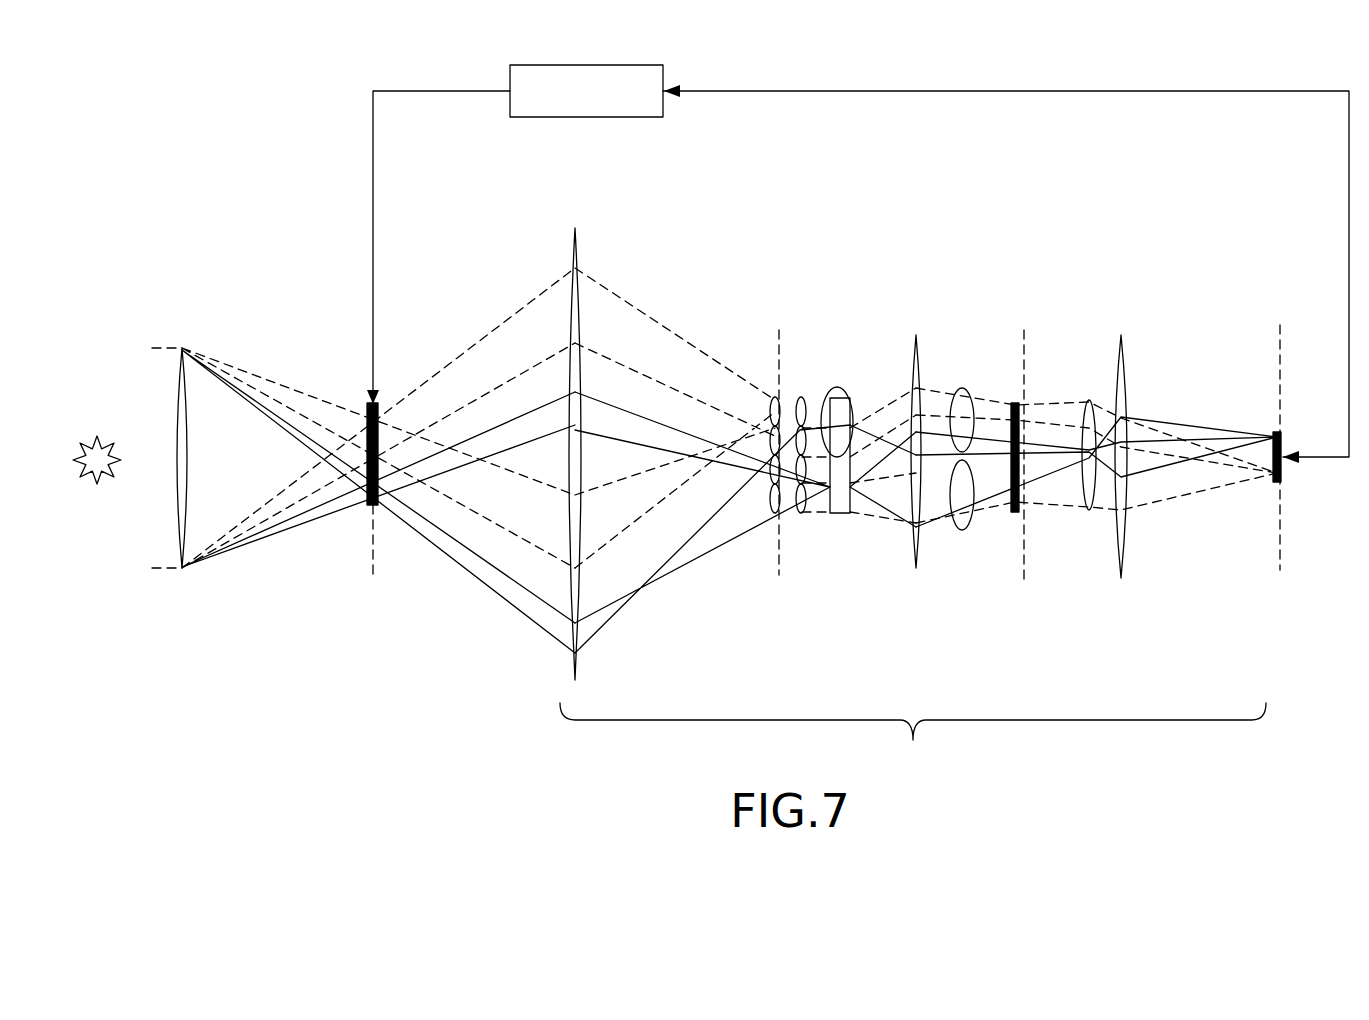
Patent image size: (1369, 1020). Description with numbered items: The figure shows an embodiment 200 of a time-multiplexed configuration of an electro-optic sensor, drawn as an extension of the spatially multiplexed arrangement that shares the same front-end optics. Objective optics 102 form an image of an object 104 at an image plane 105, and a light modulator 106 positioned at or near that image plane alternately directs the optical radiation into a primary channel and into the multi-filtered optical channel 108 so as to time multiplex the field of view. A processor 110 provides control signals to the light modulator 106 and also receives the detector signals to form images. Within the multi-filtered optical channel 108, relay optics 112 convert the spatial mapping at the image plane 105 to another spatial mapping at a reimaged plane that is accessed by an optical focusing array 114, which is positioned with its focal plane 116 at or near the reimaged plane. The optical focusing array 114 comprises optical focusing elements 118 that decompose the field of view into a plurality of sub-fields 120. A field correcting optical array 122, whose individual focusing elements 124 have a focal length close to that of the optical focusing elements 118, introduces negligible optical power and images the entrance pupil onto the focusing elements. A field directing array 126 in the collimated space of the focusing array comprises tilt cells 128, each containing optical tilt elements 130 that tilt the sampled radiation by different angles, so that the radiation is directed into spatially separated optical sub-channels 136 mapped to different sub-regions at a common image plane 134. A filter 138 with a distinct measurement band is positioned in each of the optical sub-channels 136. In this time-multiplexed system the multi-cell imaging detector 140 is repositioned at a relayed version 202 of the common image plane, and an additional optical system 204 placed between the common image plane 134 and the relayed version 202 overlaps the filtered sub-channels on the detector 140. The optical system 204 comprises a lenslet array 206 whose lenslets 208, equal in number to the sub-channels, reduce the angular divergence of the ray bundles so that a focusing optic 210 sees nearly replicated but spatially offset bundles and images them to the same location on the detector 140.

The objective optics 102 is at (178, 396).
The object 104 is at (117, 478).
The image plane 105 is at (371, 568).
The light modulator 106 is at (370, 404).
The multi-filtered optical channel 108 is at (913, 738).
The processor 110 is at (640, 117).
The relay optics 112 is at (576, 232).
The optical focusing array 114 is at (799, 360).
The focal plane 116 is at (778, 333).
The optical focusing elements 118 is at (801, 513).
The sub-fields 120 is at (390, 412).
The field correcting optical array 122 is at (760, 378).
The individual focusing elements 124 is at (774, 514).
The field directing array 126 is at (829, 357).
The tilt cells 128 is at (838, 398).
The optical tilt elements 130 is at (848, 402).
The common image plane 134 is at (1025, 332).
The optical sub-channels 136 is at (962, 388).
The filter 138 is at (1014, 513).
The multi-cell imaging detector 140 is at (1276, 432).
The embodiment of the time-multiplexed configuration 200 is at (186, 192).
The relayed version of the common image plane 202 is at (1283, 569).
The additional optical system 204 is at (1040, 622).
The lenslet array 206 is at (1085, 378).
The lenslets 208 is at (1088, 510).
The focusing optic 210 is at (1122, 566).